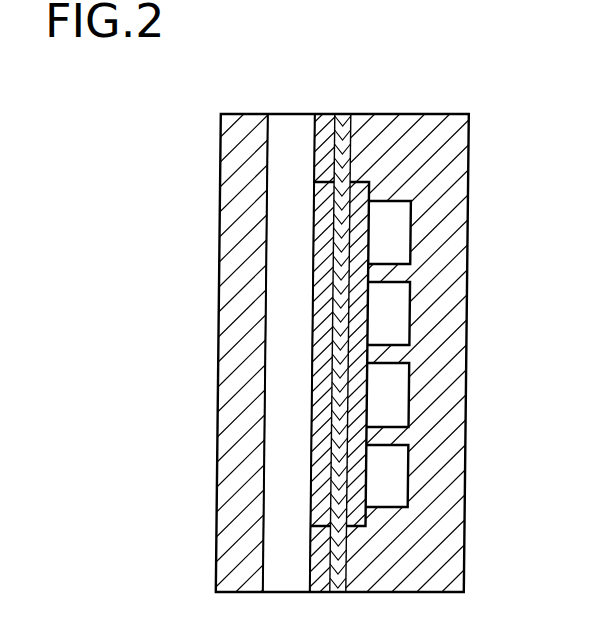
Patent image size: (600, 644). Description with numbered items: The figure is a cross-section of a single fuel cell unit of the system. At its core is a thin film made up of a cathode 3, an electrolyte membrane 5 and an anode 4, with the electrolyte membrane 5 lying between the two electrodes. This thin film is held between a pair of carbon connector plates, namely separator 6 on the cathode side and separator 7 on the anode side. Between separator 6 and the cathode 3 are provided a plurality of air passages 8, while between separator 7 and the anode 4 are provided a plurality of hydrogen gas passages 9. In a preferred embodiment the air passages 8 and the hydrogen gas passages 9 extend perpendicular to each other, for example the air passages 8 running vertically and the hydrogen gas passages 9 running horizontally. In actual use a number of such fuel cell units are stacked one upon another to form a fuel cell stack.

The cathode 3 is at (316, 352).
The anode 4 is at (362, 527).
The electrolyte membrane 5 is at (338, 590).
The separator 6 is at (252, 114).
The separator 7 is at (400, 114).
The air passages 8 is at (290, 233).
The hydrogen gas passages 9 is at (408, 247).